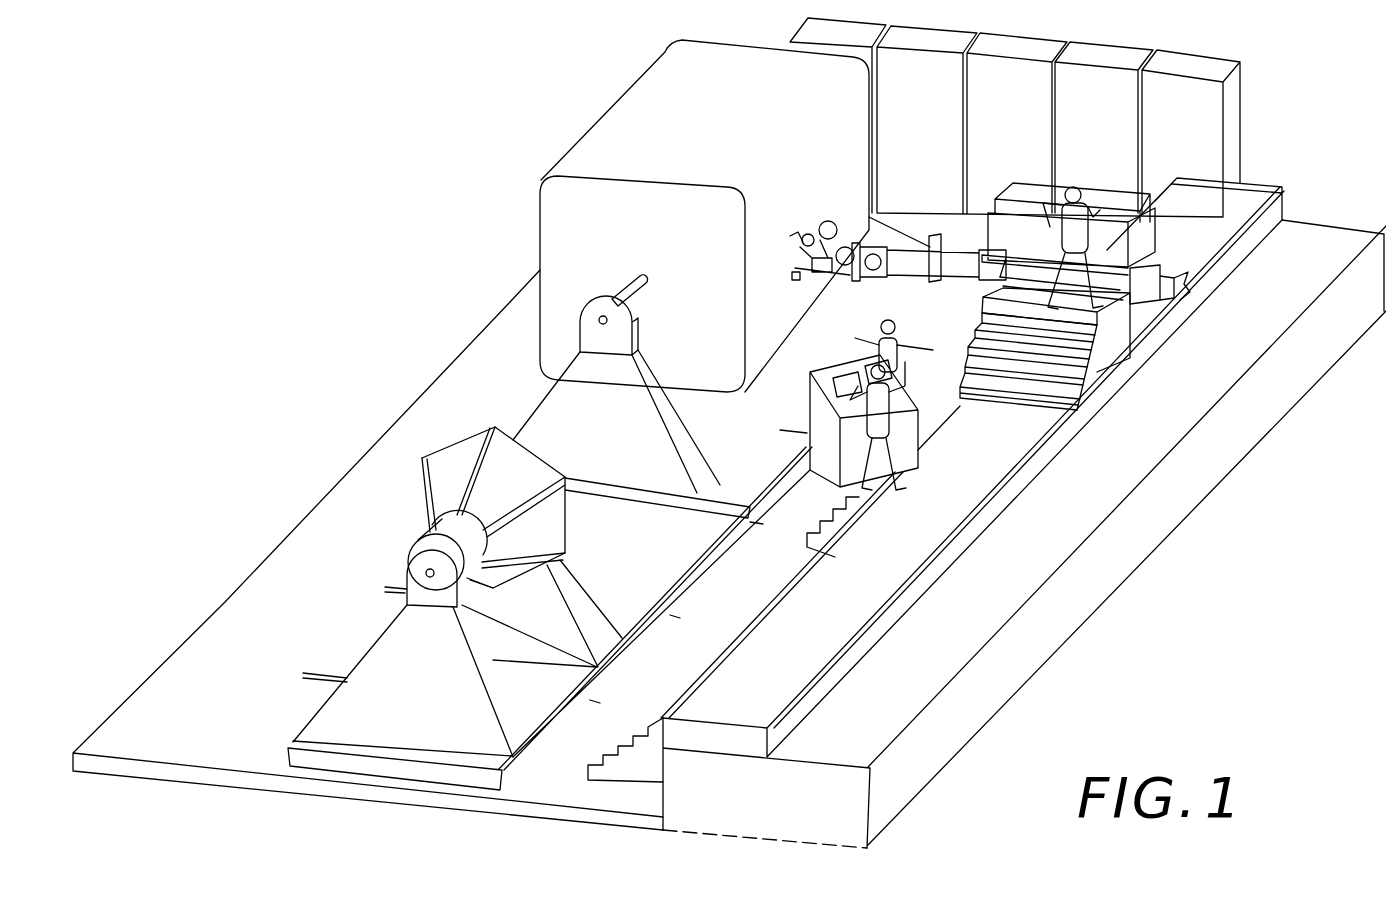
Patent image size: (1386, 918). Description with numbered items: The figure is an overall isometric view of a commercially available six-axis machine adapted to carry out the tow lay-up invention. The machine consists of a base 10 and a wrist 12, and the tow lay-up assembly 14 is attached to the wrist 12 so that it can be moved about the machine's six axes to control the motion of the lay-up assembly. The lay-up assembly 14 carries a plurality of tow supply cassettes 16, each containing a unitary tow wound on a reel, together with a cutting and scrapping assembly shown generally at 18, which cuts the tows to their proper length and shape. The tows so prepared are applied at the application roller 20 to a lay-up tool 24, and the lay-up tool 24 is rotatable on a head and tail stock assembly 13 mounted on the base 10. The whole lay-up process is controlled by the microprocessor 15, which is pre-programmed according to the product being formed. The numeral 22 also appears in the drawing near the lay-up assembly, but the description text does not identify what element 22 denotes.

The base 10 is at (1005, 453).
The wrist 12 is at (867, 245).
The head and tail stock assembly 13 is at (587, 320).
The tow lay-up assembly 14 is at (797, 277).
The microprocessor 15 is at (823, 463).
The tow supply cassettes 16 is at (847, 262).
The cutting and scrapping assembly 18 is at (818, 268).
The application roller 20 is at (777, 263).
The optical sensor 22 is at (795, 237).
The lay-up tool 24 is at (657, 82).